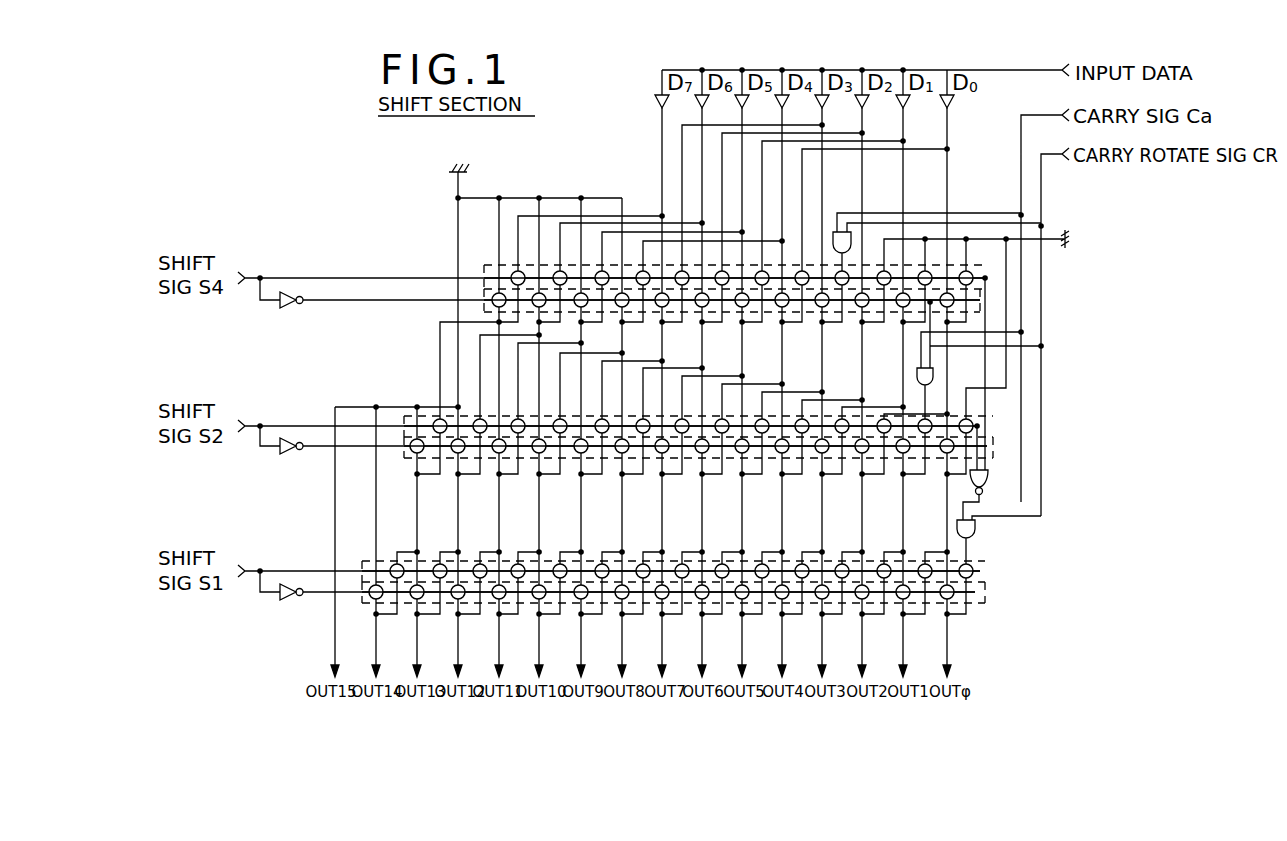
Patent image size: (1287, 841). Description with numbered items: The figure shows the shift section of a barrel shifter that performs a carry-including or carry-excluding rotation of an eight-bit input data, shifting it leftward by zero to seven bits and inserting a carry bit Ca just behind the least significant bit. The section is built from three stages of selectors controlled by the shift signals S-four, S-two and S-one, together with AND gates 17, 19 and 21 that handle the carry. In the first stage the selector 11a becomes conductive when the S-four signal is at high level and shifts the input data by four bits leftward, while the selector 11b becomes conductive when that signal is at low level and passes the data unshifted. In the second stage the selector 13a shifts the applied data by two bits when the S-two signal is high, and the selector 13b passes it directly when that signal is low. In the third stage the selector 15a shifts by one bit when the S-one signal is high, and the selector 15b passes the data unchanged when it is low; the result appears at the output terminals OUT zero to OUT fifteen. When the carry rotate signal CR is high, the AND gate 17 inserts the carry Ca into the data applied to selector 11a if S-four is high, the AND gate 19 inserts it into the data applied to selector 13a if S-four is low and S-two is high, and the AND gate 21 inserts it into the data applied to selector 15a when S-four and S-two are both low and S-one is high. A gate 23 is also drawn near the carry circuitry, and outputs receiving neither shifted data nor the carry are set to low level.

The selector 11a is at (484, 268).
The selector 11b is at (480, 311).
The selector 13a is at (433, 416).
The selector 13b is at (412, 462).
The selector 15a is at (372, 560).
The selector 15b is at (365, 605).
The AND gate 17 is at (838, 232).
The AND gate 19 is at (917, 380).
The AND gate 21 is at (976, 532).
The NAND gate 23 is at (990, 478).